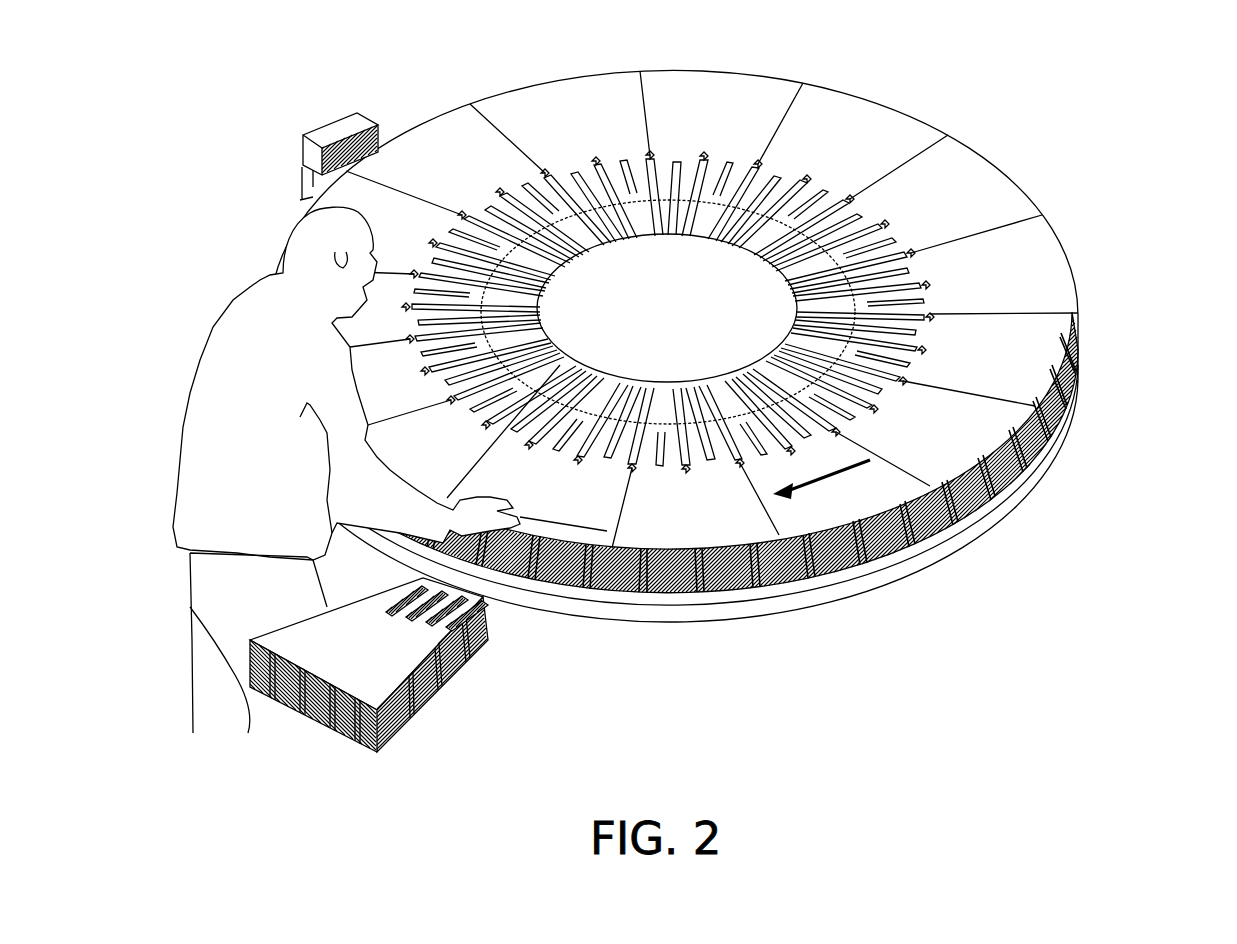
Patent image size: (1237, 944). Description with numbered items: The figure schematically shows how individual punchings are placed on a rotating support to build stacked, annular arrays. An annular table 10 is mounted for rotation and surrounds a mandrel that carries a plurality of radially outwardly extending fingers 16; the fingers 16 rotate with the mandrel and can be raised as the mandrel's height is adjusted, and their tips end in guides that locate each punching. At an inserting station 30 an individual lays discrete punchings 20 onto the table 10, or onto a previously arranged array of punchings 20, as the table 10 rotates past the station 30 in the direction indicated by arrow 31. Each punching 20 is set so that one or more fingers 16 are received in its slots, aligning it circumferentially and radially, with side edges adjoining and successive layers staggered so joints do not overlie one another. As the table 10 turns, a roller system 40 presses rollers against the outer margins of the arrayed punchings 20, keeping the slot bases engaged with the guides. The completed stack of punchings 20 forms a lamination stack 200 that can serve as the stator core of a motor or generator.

The table 10 is at (823, 598).
The fingers 16 is at (565, 255).
The punchings 20 is at (885, 495).
The inserting station 30 is at (464, 693).
The arrow 31 is at (821, 483).
The roller system 40 is at (303, 138).
The lamination stack 200 is at (742, 402).